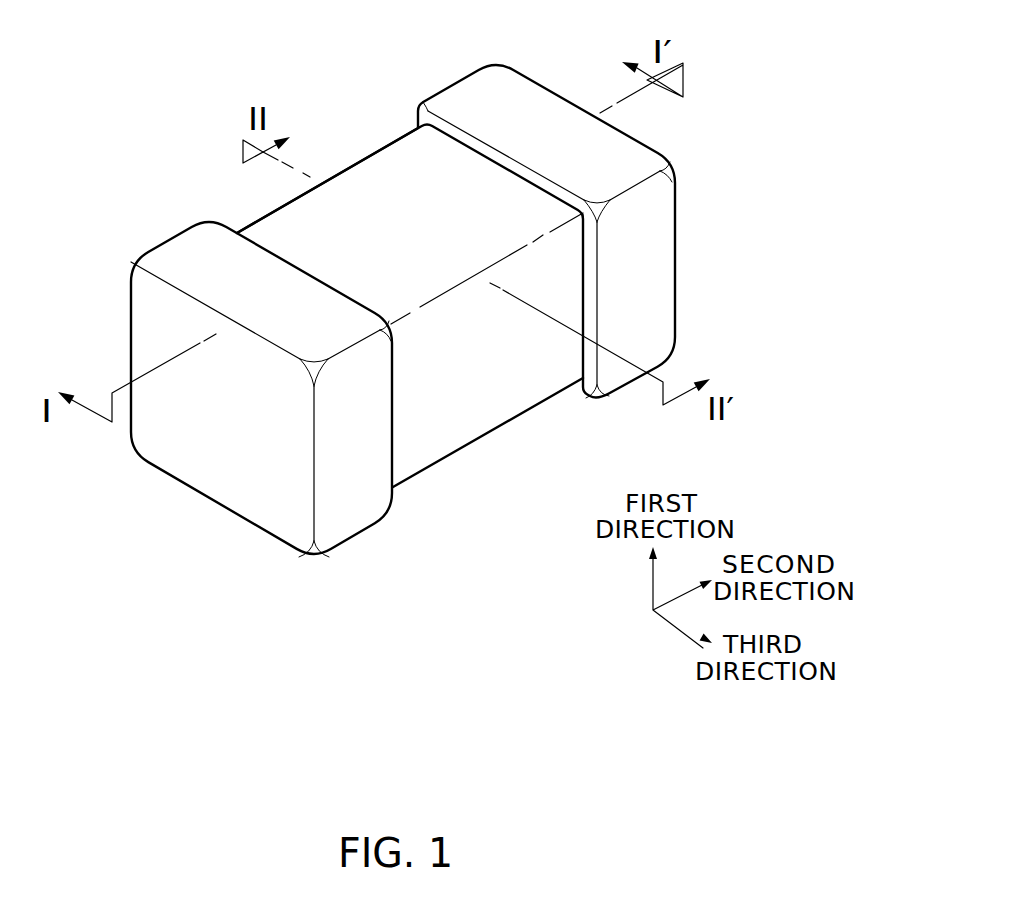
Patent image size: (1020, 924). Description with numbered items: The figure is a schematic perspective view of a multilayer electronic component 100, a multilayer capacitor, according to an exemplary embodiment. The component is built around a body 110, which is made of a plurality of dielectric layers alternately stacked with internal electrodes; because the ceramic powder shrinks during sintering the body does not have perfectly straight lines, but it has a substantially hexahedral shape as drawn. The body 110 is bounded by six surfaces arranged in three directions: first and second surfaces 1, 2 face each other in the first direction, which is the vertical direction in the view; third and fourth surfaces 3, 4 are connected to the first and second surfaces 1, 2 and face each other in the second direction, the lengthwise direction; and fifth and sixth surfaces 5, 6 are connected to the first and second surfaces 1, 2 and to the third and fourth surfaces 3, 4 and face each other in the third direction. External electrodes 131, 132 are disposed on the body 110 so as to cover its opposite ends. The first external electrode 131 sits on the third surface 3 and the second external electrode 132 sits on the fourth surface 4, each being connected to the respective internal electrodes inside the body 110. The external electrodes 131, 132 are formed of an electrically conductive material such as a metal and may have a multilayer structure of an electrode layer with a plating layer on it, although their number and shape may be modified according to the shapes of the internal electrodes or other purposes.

The multilayer electronic component 100 is at (171, 30).
The body 110 is at (273, 238).
The first external electrode 131 is at (189, 258).
The second external electrode 132 is at (462, 100).
The first surface 1 is at (446, 402).
The second surface 2 is at (417, 186).
The third surface 3 is at (230, 452).
The fourth surface 4 is at (618, 249).
The fifth surface 5 is at (360, 208).
The sixth surface 6 is at (504, 372).